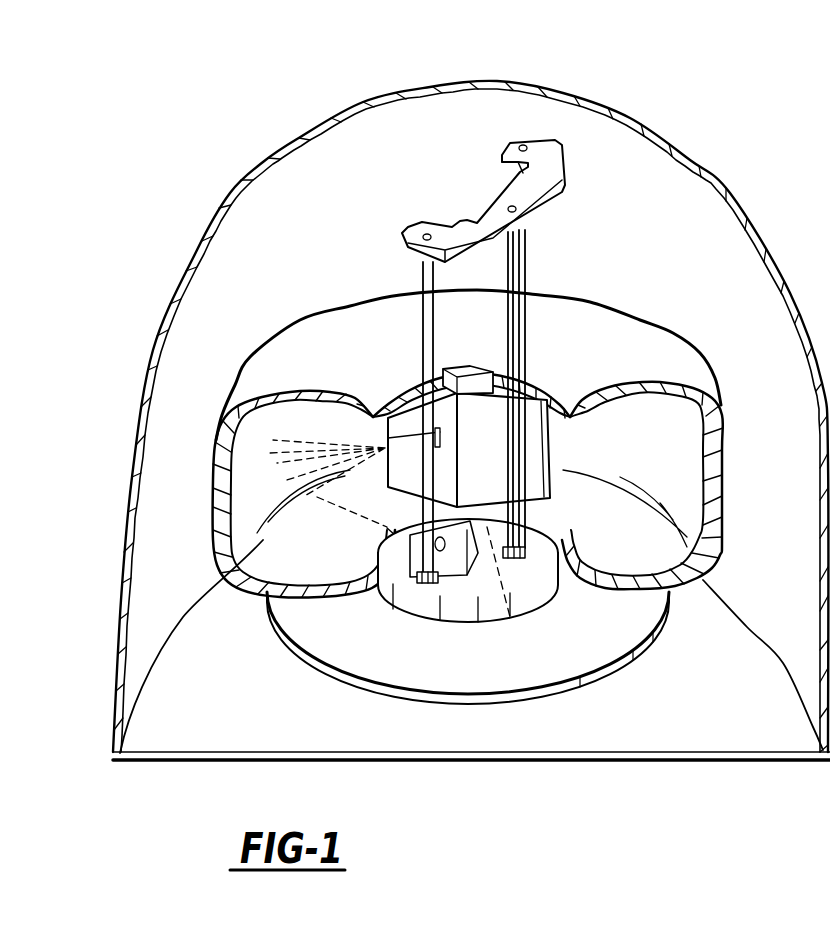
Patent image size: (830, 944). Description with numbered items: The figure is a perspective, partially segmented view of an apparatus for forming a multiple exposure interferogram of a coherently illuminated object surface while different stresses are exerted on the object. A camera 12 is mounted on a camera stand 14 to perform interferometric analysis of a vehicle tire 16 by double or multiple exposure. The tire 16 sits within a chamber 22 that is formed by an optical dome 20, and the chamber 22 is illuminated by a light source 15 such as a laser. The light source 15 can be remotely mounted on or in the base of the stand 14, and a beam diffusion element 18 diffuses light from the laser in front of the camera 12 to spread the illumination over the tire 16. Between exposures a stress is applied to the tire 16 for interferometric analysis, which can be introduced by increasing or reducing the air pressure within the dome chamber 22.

The camera 12 is at (543, 440).
The camera stand 14 is at (543, 202).
The light source 15 is at (511, 610).
The vehicle tire 16 is at (717, 408).
The beam diffusion element 18 is at (327, 437).
The optical dome 20 is at (728, 195).
The chamber 22 is at (782, 559).